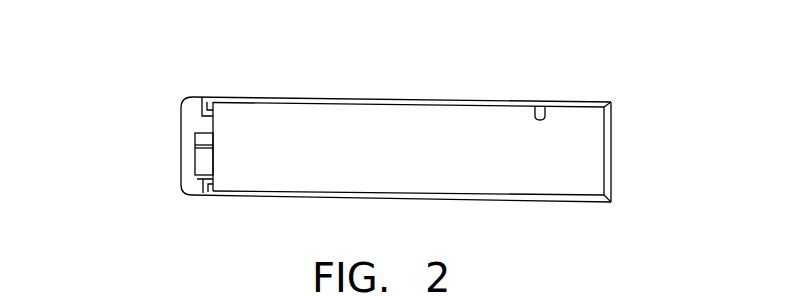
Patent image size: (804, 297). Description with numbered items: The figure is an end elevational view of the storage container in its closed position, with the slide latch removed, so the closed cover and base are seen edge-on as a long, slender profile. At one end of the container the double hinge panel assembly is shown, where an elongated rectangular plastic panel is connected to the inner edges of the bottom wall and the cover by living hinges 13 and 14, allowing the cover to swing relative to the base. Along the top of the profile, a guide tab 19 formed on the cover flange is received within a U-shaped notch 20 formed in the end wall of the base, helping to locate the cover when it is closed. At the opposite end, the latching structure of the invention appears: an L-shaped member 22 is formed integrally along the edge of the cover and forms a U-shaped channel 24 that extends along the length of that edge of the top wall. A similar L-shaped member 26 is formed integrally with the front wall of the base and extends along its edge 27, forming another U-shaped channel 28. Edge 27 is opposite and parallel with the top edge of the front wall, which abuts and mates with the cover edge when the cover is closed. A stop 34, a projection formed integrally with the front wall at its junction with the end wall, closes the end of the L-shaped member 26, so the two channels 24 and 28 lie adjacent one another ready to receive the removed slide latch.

The living hinge 13 is at (611, 202).
The living hinge 14 is at (611, 102).
The guide tab 19 is at (538, 106).
The U-shaped notch 20 is at (535, 120).
The L-shaped member 22 is at (205, 113).
The U-shaped channel 24 is at (211, 100).
The L-shaped member 26 is at (197, 180).
The edge 27 is at (221, 194).
The U-shaped channel 28 is at (208, 194).
The stop 34 is at (194, 152).